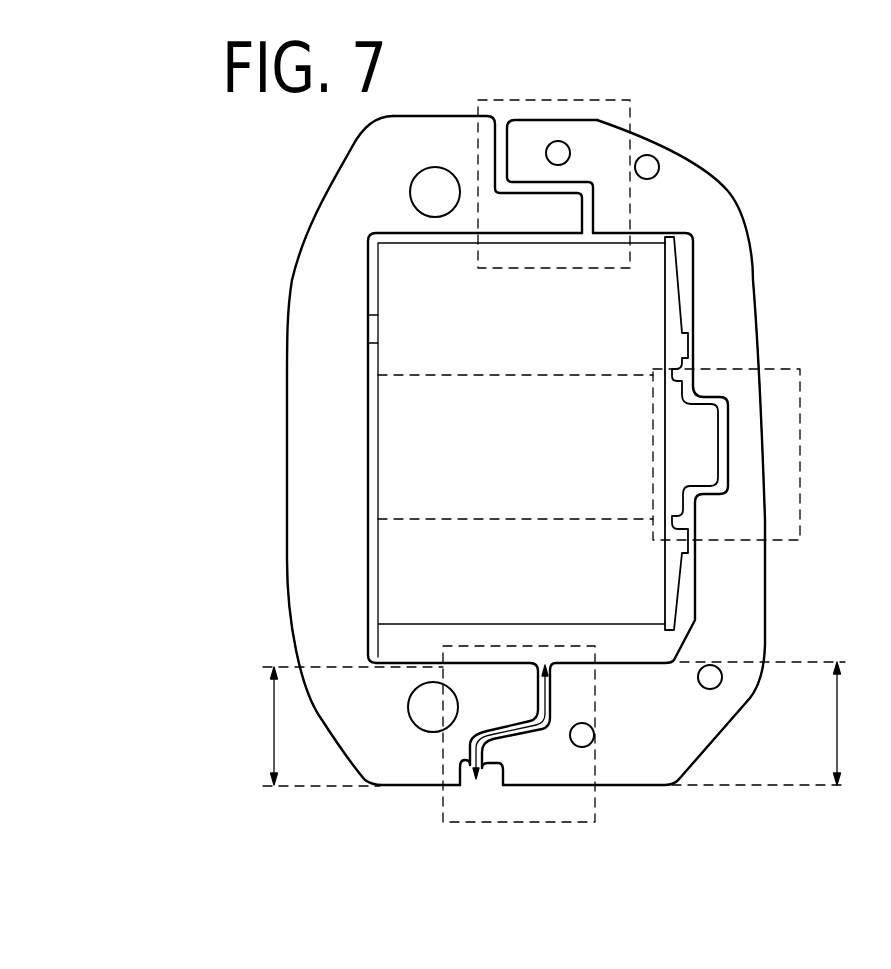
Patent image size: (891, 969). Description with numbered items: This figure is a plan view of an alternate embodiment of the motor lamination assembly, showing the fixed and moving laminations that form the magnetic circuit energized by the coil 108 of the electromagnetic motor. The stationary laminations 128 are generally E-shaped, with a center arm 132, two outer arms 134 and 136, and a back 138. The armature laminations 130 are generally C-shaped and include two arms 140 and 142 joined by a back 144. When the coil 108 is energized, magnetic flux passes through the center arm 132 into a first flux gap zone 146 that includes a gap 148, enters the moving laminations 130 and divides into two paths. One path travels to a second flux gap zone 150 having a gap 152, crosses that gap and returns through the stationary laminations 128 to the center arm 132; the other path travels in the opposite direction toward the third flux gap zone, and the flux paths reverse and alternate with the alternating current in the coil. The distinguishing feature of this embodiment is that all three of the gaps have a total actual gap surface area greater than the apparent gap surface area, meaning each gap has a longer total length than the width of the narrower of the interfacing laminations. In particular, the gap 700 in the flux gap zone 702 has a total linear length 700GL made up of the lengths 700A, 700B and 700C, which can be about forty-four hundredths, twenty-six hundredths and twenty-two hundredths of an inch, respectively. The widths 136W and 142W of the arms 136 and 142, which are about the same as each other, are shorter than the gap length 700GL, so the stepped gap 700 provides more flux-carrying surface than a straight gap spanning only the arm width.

The coil 108 is at (400, 592).
The stationary laminations 128 is at (287, 495).
The armature laminations 130 is at (767, 575).
The center arm 132 is at (440, 442).
The outer arm 134 is at (387, 148).
The outer arm 136 is at (360, 732).
The width of arm 136W is at (274, 732).
The back 138 is at (310, 542).
The arm 140 is at (642, 145).
The arm 142 is at (633, 762).
The width of arm 142W is at (838, 733).
The back 144 is at (745, 617).
The first flux gap zone 146 is at (800, 522).
The gap 148 is at (720, 443).
The second flux gap zone 150 is at (493, 100).
The gap 152 is at (507, 145).
The gap 700 is at (483, 742).
The length 700A is at (460, 787).
The length 700B is at (532, 709).
The length 700C is at (537, 685).
The total linear length 700GL is at (503, 785).
The flux gap zone 702 is at (592, 812).